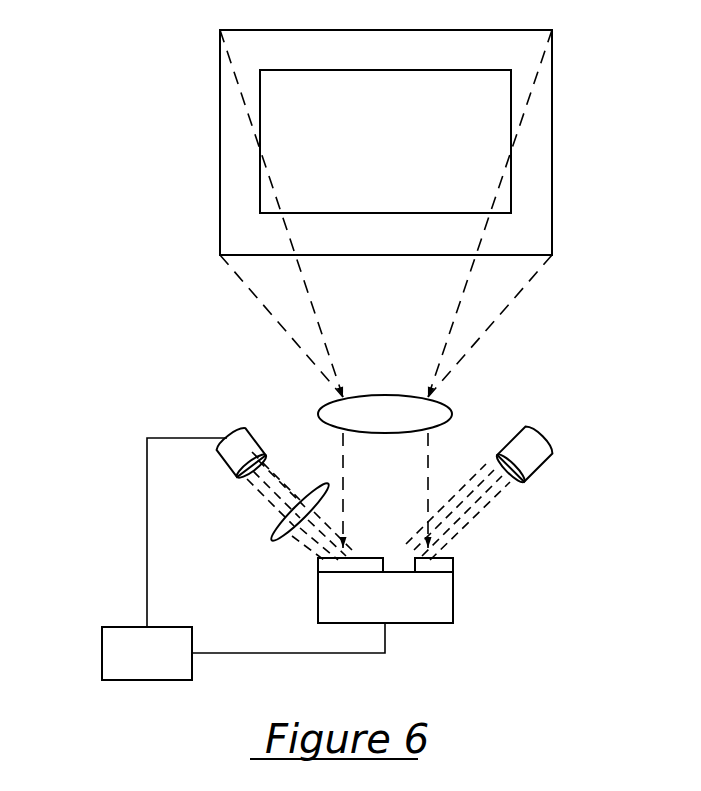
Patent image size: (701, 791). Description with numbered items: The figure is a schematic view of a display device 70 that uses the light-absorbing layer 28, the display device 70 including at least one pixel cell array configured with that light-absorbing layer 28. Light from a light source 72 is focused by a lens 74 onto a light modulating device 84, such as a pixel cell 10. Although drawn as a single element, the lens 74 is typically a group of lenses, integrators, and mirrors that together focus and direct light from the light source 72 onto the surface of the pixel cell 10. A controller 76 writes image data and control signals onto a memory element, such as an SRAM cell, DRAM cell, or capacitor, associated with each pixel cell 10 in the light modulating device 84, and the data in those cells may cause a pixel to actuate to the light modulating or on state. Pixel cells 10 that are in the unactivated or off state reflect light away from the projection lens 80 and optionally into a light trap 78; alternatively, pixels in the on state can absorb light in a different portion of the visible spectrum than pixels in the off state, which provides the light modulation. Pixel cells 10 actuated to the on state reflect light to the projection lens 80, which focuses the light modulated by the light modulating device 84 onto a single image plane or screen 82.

The display device 70 is at (102, 217).
The light source 72 is at (243, 437).
The lens 74 is at (272, 527).
The controller 76 is at (158, 664).
The light trap 78 is at (530, 450).
The projection lens 80 is at (433, 412).
The screen 82 is at (552, 140).
The light-absorbing layer 28 is at (368, 560).
The light modulating device 84 is at (415, 601).
The pixel cell 10 is at (385, 597).